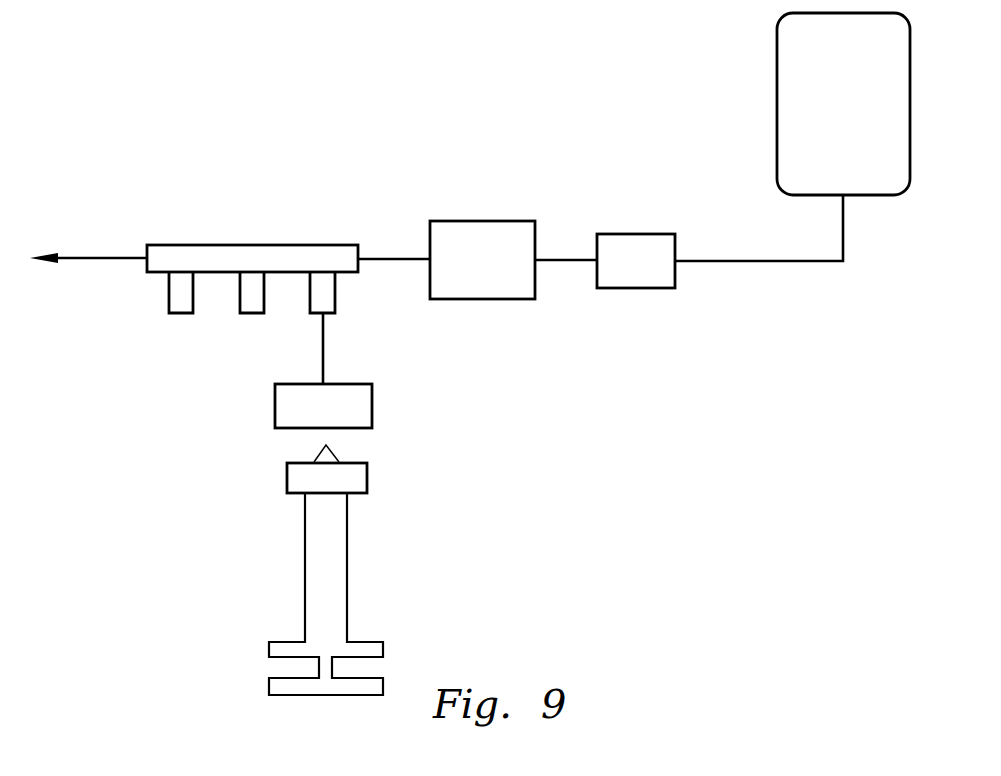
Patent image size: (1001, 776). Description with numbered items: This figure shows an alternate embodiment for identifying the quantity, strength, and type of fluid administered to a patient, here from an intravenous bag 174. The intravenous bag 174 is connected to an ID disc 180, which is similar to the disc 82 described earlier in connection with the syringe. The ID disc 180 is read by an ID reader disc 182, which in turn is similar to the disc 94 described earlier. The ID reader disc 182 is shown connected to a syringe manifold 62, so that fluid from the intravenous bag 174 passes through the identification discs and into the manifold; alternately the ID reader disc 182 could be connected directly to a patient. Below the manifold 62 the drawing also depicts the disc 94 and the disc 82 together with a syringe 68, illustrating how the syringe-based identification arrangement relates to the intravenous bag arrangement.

The syringe manifold 62 is at (175, 245).
The ID reader disc 182 is at (456, 221).
The ID disc 180 is at (635, 288).
The intravenous bag 174 is at (870, 105).
The disc 94 is at (275, 408).
The disc 82 is at (287, 490).
The syringe 68 is at (347, 538).